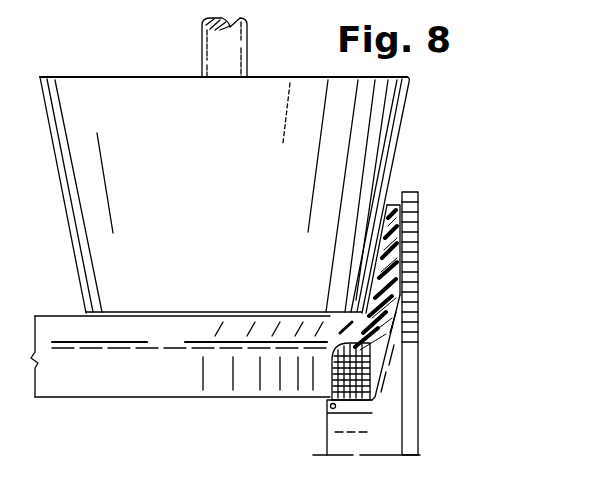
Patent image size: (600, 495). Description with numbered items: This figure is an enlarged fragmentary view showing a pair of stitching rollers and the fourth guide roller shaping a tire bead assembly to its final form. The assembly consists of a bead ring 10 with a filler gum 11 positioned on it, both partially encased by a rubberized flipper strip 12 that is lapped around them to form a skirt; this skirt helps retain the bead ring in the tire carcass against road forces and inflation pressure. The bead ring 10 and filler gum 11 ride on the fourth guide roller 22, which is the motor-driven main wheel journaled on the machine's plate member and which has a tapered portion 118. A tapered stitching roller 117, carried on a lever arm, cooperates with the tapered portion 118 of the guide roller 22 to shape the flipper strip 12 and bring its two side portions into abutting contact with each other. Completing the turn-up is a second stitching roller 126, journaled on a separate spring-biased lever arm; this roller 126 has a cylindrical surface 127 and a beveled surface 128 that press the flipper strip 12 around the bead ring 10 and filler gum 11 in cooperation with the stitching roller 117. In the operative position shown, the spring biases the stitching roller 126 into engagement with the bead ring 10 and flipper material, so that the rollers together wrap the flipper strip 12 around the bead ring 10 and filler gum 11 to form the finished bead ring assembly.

The tapered stitching roller 117 is at (166, 97).
The tapered portion 118 is at (410, 216).
The flipper strip 12 is at (390, 246).
The beveled surface 128 is at (370, 345).
The filler gum 11 is at (345, 340).
The bead ring 10 is at (330, 406).
The fourth guide roller 22 is at (327, 428).
The cylindrical surface 127 is at (142, 375).
The stitching roller 126 is at (162, 408).